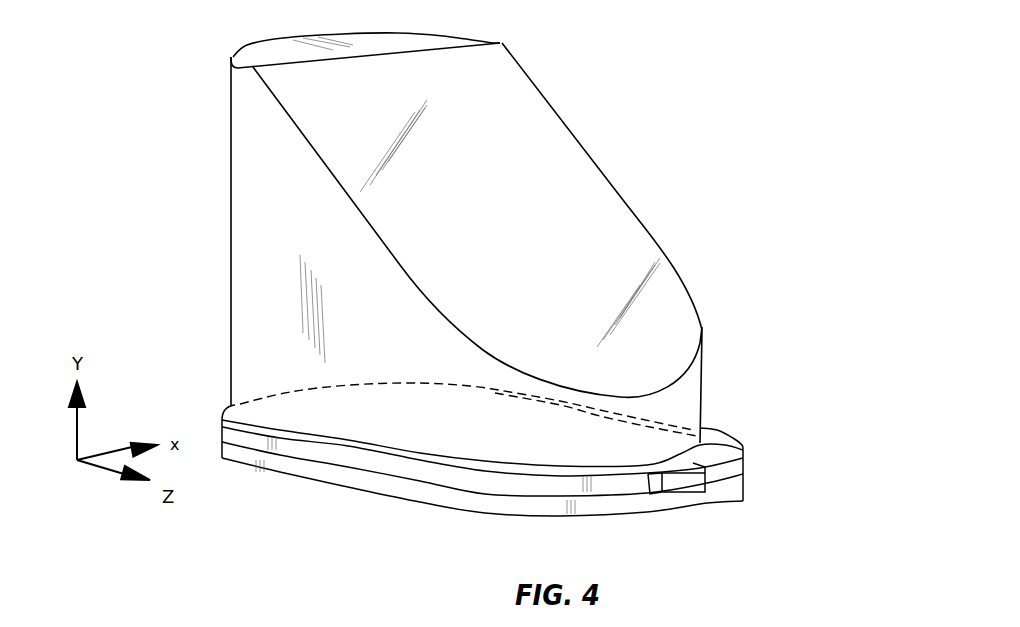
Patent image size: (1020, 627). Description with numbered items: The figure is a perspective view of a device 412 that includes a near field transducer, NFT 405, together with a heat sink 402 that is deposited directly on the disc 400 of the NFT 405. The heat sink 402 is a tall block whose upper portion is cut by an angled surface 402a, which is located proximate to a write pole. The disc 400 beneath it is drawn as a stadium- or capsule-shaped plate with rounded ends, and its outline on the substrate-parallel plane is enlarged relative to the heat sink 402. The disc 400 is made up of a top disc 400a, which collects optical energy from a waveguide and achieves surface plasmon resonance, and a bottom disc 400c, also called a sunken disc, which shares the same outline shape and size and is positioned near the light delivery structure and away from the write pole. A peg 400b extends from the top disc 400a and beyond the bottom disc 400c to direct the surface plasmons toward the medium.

The disc 400 is at (372, 490).
The top disc 400a is at (255, 447).
The peg 400b is at (680, 489).
The bottom disc 400c is at (327, 480).
The heat sink 402 is at (608, 180).
The angled surface 402a is at (542, 125).
The NFT 405 is at (753, 427).
The device 412 is at (790, 226).